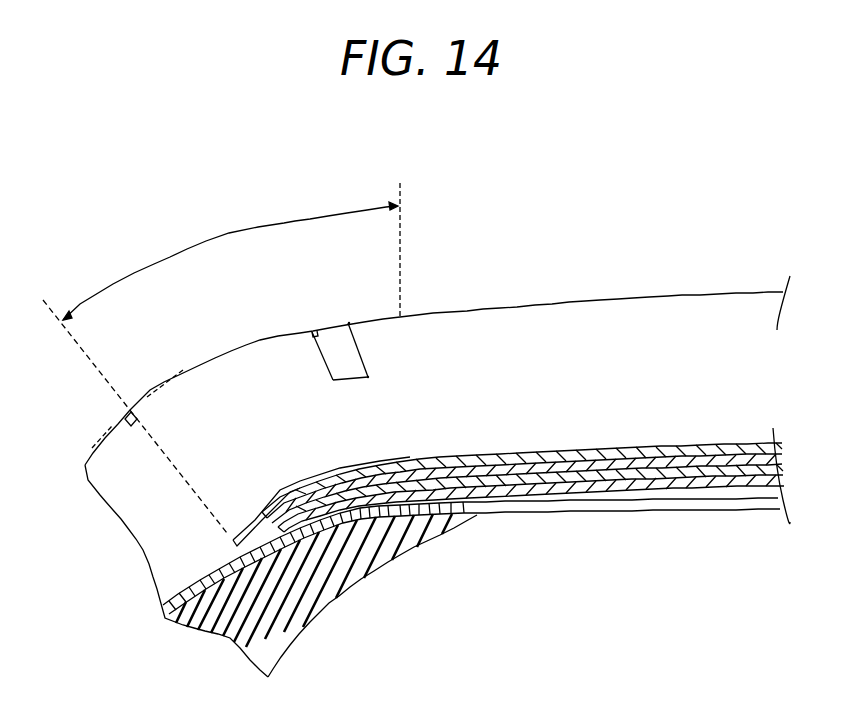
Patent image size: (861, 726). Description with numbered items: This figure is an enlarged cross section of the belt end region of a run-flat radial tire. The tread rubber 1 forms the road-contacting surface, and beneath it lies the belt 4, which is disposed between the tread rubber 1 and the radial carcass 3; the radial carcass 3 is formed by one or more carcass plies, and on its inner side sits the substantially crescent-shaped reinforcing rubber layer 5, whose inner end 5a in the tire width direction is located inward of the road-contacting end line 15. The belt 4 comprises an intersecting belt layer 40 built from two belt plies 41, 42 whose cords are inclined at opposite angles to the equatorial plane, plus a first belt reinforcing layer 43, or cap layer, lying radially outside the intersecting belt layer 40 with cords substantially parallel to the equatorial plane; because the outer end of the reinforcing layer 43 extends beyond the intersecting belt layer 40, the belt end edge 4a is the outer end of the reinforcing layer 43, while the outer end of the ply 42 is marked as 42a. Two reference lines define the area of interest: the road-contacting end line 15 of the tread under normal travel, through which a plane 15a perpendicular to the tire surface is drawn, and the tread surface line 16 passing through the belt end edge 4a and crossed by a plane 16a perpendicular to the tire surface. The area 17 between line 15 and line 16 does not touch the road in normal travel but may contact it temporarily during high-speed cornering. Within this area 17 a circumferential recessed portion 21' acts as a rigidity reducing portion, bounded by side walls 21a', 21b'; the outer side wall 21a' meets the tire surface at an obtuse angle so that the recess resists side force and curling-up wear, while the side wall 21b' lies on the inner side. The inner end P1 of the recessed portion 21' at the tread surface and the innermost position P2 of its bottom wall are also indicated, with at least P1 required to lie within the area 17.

The tread rubber 1 is at (662, 312).
The radial carcass 3 is at (175, 583).
The belt 4 is at (642, 440).
The end edge of the belt 4a is at (233, 543).
The reinforcing rubber layer 5 is at (288, 600).
The inner end of the reinforcing rubber layer 5a is at (477, 517).
The road-contacting end line of the tread 15 is at (402, 317).
The plane perpendicular to the tire surface 15a is at (402, 186).
The tread surface line at the belt end edge 16 is at (128, 410).
The plane perpendicular to the tire surface 16a is at (48, 300).
The area of the tread portion 17 is at (230, 259).
The recessed portion 21' is at (360, 330).
The side wall of the recessed portion 21a' is at (327, 395).
The side wall of the recessed portion 21b' is at (393, 350).
The intersecting belt layer 40 is at (578, 375).
The belt ply 41 is at (550, 477).
The belt ply 42 is at (465, 443).
The outer belt layer edge 42a is at (258, 511).
The first belt reinforcing layer 43 is at (243, 530).
The inner end of the recessed portion P1 is at (350, 322).
The innermost position of the bottom wall P2 is at (368, 378).